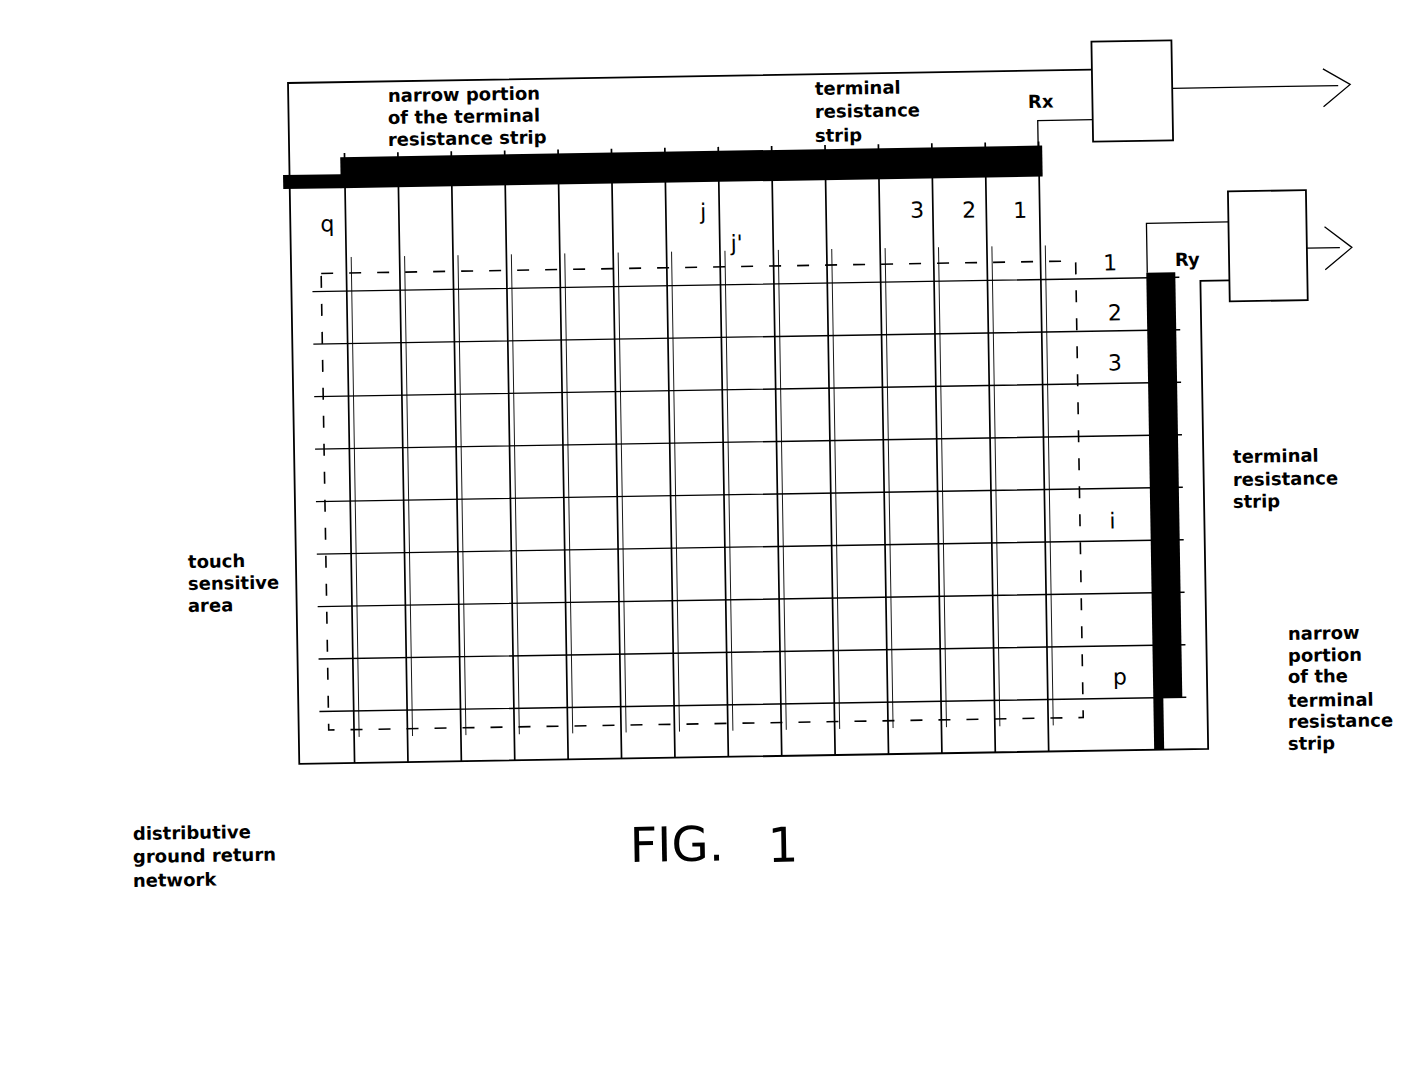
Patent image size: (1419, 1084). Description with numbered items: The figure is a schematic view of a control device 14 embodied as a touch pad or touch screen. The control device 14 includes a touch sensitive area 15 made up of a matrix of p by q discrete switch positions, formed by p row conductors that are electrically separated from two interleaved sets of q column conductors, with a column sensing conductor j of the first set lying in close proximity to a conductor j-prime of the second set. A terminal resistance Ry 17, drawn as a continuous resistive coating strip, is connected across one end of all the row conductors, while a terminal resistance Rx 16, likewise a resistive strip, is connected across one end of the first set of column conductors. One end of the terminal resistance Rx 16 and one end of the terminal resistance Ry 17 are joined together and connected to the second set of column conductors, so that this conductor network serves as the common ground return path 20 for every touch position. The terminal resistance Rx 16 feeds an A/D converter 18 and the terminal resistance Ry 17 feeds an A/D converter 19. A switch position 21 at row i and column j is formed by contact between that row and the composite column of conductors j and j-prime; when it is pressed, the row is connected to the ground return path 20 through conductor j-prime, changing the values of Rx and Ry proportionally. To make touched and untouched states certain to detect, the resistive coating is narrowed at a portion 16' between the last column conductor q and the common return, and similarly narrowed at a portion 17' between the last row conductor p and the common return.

The control device 14 is at (261, 346).
The touch sensitive area 15 is at (311, 426).
The terminal resistance Rx 16 is at (716, 141).
The narrowed portion of the terminal resistance Rx 16' is at (326, 148).
The terminal resistance Ry 17 is at (1206, 459).
The narrowed portion of the terminal resistance Ry 17' is at (1214, 702).
The A/D converter 18 is at (1173, 78).
The A/D converter 19 is at (1244, 318).
The ground return path 20 is at (434, 770).
The switch position (i,j) 21 is at (710, 557).